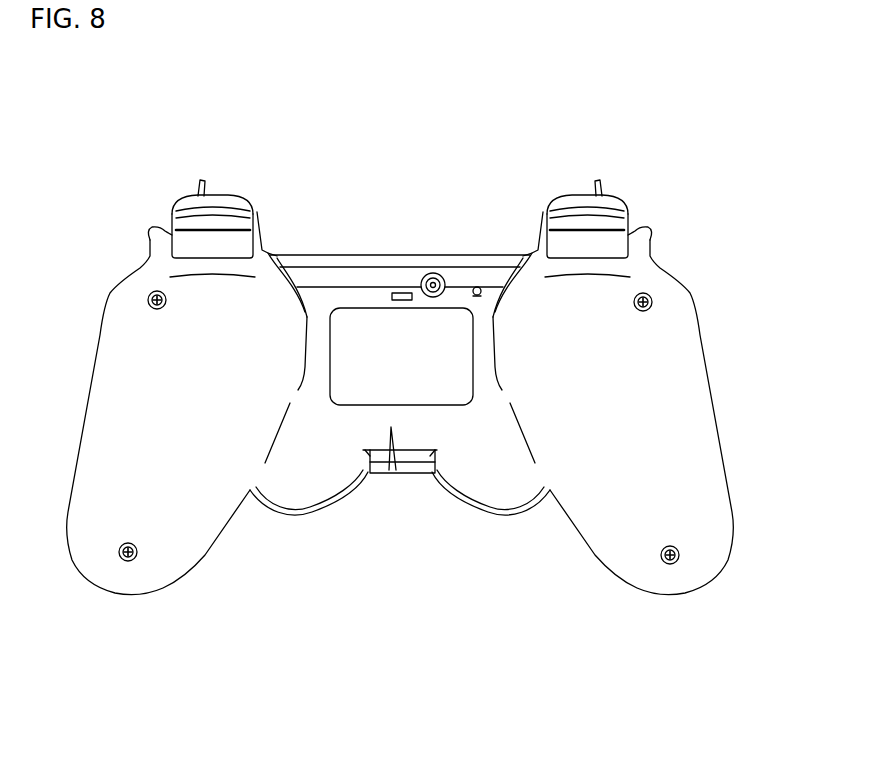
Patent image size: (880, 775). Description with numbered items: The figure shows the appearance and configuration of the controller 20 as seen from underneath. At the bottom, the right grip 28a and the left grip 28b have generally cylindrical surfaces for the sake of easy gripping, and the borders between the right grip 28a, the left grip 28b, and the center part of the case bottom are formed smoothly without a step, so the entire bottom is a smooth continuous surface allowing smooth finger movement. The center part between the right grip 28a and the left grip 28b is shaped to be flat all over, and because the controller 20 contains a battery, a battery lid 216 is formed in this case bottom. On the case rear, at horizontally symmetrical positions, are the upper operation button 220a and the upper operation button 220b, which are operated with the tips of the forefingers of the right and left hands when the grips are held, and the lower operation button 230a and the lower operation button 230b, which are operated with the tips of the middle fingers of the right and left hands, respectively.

The controller 20 is at (668, 95).
The battery lid 216 is at (406, 388).
The right grip 28a is at (135, 590).
The left grip 28b is at (670, 593).
The upper operation button 220a is at (210, 207).
The upper operation button 220b is at (592, 207).
The lower operation button 230a is at (178, 247).
The lower operation button 230b is at (622, 247).